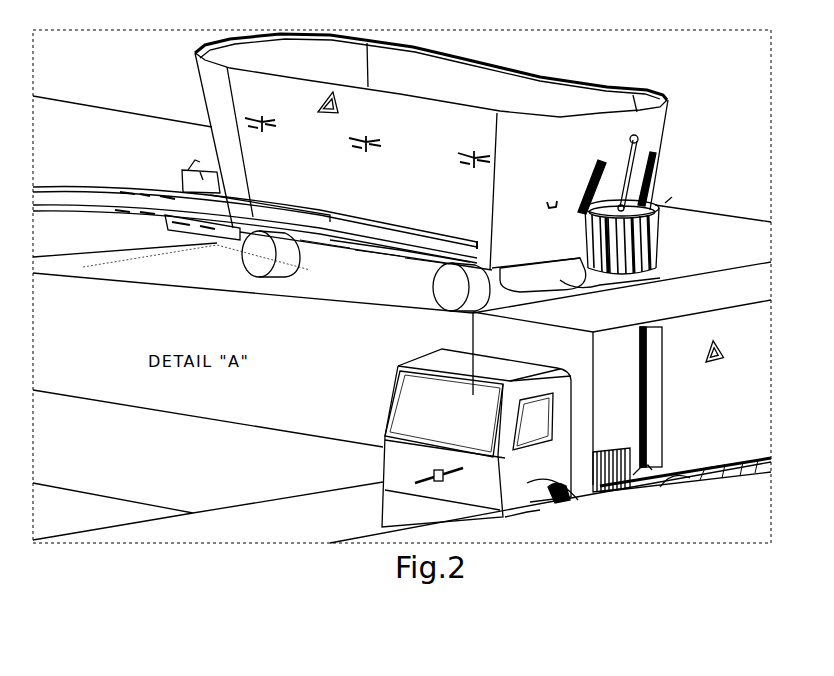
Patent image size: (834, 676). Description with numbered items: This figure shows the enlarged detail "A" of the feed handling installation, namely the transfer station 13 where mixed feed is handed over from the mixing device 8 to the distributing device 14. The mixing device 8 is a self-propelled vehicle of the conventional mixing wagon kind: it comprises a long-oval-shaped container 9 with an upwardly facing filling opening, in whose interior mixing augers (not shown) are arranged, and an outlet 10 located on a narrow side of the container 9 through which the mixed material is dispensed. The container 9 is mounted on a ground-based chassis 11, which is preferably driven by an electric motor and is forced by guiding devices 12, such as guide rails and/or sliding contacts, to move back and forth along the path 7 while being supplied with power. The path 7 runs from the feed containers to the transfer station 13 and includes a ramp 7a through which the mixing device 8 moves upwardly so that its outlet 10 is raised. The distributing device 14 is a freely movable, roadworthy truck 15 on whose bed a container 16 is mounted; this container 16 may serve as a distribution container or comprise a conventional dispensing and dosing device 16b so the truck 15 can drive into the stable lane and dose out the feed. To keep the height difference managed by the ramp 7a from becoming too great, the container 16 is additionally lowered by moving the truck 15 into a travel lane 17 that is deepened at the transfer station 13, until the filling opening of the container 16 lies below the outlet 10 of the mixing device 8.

The path 7 is at (43, 271).
The ramp 7a is at (53, 266).
The mixing device 8 is at (434, 152).
The container 9 is at (553, 154).
The outlet 10 is at (661, 209).
The chassis 11 is at (373, 275).
The guiding devices 12 is at (73, 184).
The transfer station 13 is at (710, 247).
The distributing device 14 is at (787, 288).
The truck 15 is at (402, 467).
The container 16 is at (701, 347).
The dispensing and dosing device 16b is at (631, 453).
The travel lane 17 is at (334, 536).